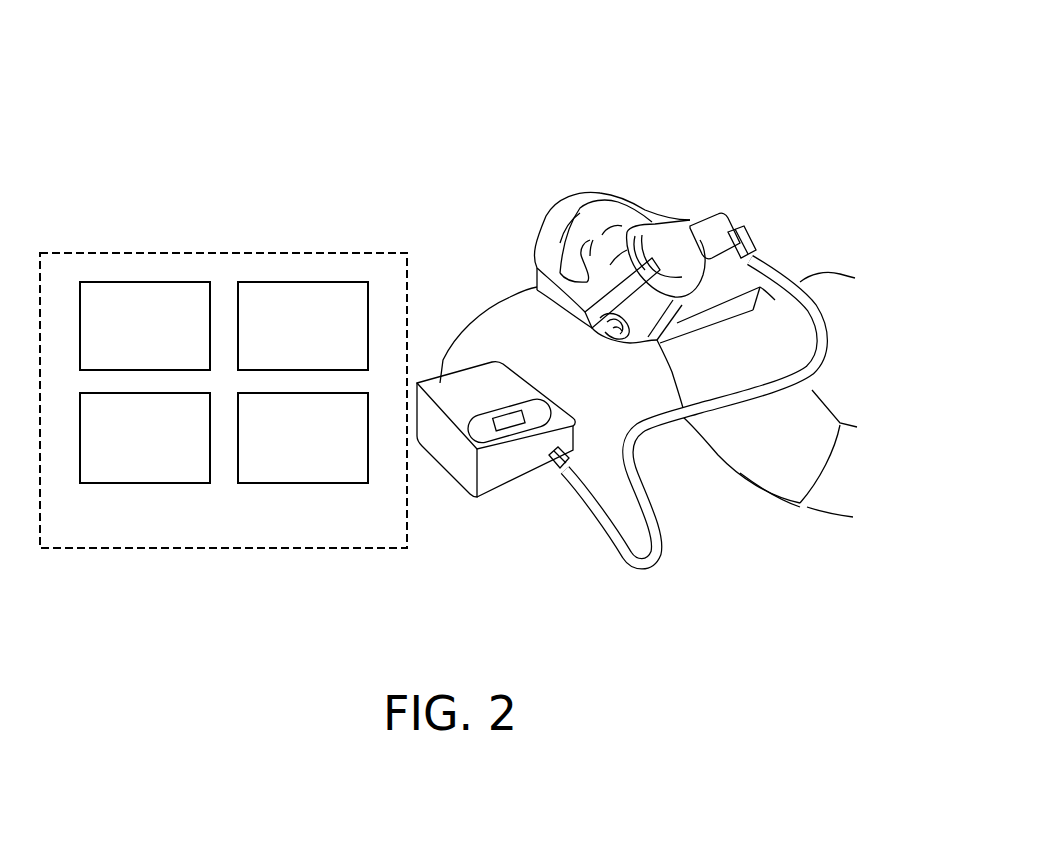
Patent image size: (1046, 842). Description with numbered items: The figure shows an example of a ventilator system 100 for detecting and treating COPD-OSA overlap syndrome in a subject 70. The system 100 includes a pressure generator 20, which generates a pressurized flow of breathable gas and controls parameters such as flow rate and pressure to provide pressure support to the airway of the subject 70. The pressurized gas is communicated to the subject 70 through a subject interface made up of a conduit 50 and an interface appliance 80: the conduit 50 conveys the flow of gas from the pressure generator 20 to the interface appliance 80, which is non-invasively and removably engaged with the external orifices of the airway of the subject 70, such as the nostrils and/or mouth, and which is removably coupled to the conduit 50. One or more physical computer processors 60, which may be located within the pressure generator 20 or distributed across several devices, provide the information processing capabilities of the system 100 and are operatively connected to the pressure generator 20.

The system 100 is at (146, 112).
The physical computer processor 60 is at (355, 253).
The pressure generator 20 is at (515, 492).
The conduit 50 is at (707, 412).
The subject 70 is at (608, 209).
The interface appliance 80 is at (680, 230).